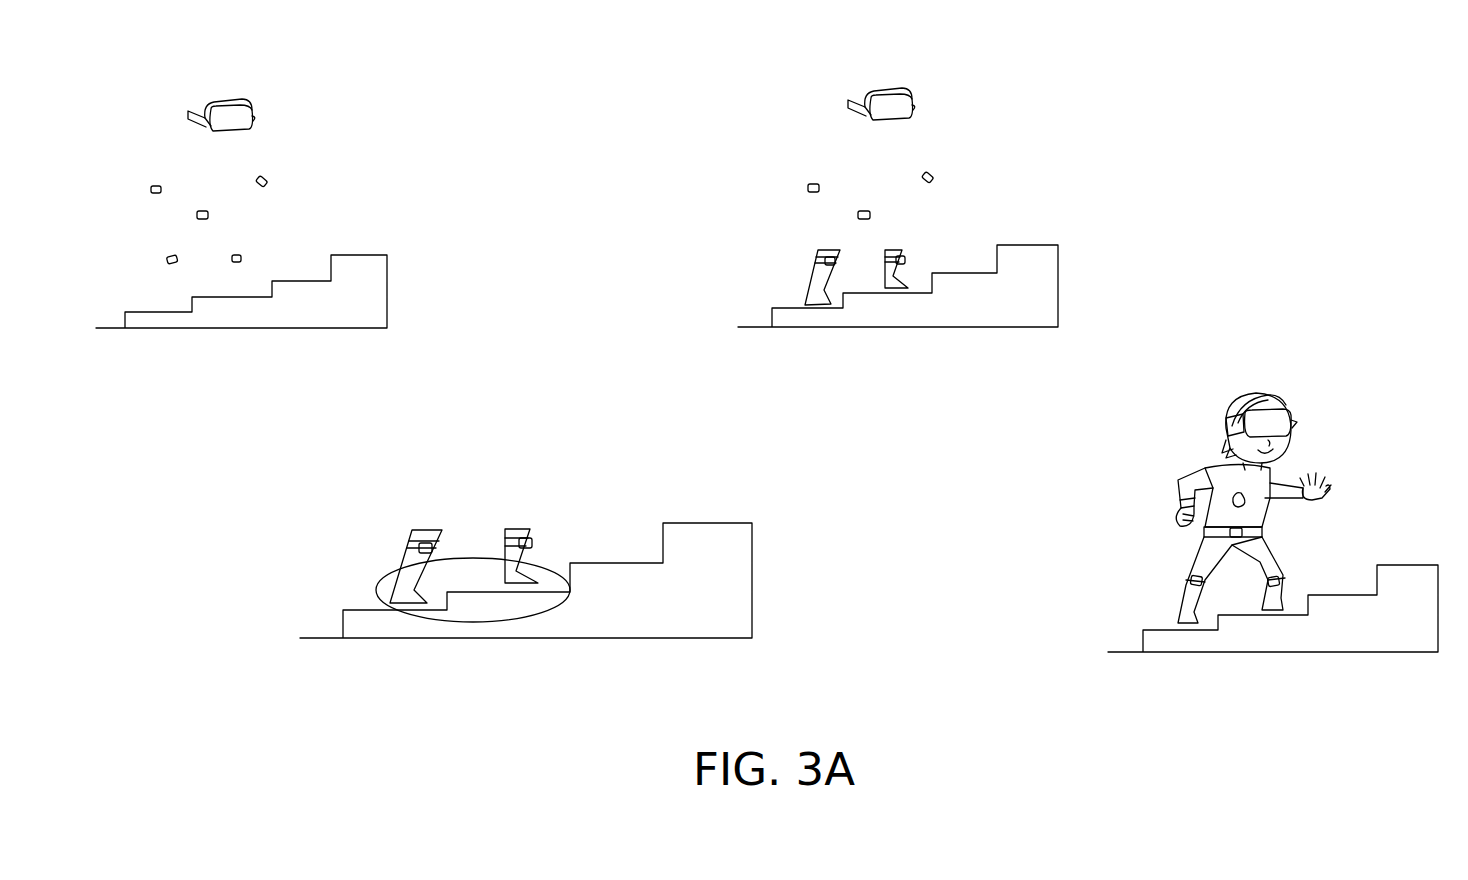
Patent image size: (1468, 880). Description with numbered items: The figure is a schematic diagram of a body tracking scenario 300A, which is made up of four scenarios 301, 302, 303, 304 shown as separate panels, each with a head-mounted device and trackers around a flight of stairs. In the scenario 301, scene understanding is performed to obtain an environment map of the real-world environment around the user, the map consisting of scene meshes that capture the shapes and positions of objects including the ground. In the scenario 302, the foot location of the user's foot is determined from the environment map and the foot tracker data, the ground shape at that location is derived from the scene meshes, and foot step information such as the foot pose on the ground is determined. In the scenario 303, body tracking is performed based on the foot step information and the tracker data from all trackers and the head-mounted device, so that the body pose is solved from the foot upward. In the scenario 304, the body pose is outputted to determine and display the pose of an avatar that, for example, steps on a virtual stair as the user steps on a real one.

The scenario 301 is at (153, 65).
The scenario 302 is at (401, 472).
The scenario 303 is at (777, 82).
The scenario 304 is at (1216, 368).
The body tracking scenario 300A is at (1452, 700).